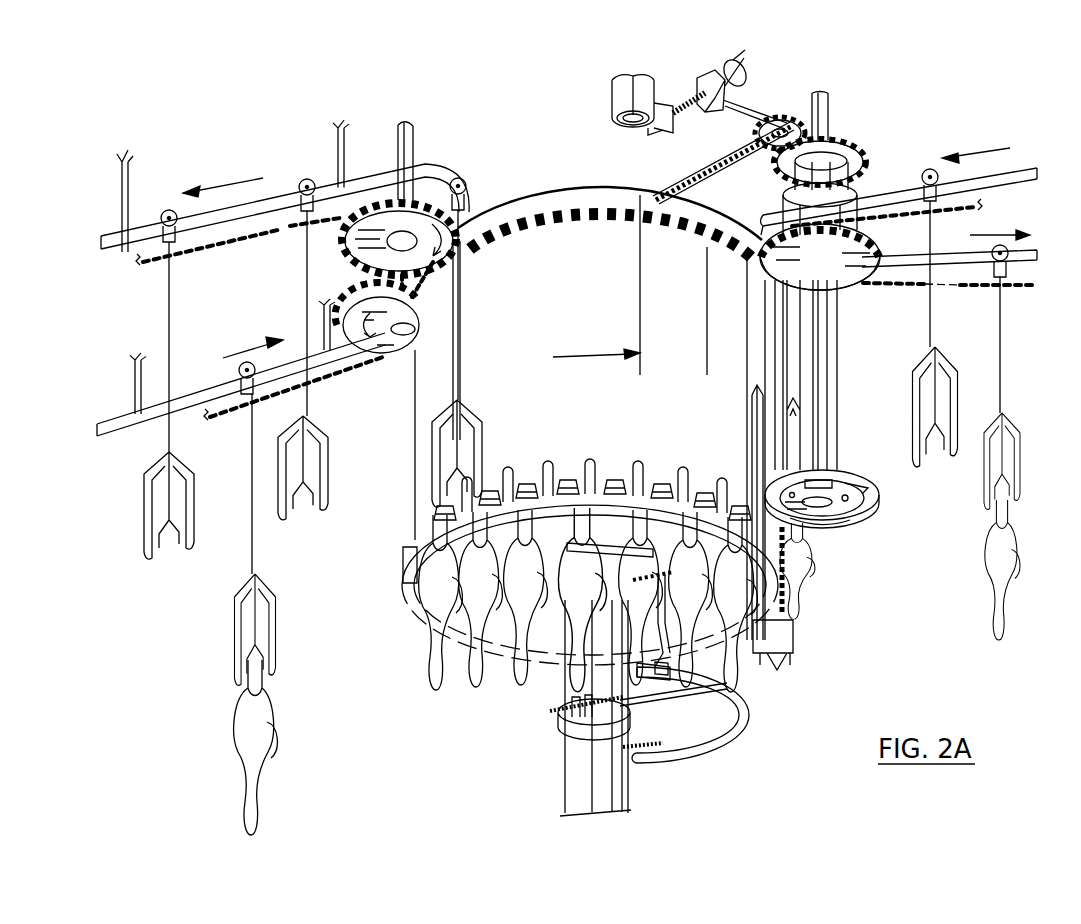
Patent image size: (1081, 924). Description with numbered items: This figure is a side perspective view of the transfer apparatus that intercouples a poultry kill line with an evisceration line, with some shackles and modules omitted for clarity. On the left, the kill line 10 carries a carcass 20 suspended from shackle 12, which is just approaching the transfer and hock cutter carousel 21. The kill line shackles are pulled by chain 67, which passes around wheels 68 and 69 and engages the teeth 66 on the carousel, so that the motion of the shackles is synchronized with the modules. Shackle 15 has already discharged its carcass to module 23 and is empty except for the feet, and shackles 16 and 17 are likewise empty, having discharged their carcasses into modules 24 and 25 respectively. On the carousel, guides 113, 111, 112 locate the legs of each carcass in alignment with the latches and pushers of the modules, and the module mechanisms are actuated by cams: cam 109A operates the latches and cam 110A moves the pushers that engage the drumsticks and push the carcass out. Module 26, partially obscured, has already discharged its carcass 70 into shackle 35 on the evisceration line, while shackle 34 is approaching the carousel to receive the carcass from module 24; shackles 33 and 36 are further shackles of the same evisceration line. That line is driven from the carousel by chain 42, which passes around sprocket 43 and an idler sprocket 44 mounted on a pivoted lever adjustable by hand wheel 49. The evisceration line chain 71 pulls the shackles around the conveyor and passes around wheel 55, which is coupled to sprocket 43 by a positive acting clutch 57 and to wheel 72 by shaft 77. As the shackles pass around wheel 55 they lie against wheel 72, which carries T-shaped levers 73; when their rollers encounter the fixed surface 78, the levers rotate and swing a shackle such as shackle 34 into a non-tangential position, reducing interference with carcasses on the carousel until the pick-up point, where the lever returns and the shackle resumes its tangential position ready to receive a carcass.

The kill line 10 is at (273, 200).
The shackle 12 is at (276, 632).
The shackle 15 is at (473, 403).
The shackle 16 is at (328, 462).
The shackle 17 is at (194, 490).
The carcass 20 is at (275, 724).
The transfer and hock cutter carousel 21 is at (611, 419).
The module 23 is at (487, 577).
The module 24 is at (620, 607).
The module 25 is at (740, 627).
The module 26 is at (770, 670).
The shackle 33 is at (917, 380).
The shackle 34 is at (752, 423).
The shackle 35 is at (797, 427).
The shackle 36 is at (1015, 420).
The chain 42 is at (680, 172).
The sprocket 43 is at (835, 145).
The idler sprocket 44 is at (762, 143).
The hand wheel 49 is at (753, 65).
The wheel 55 is at (850, 270).
The positive acting clutch 57 is at (783, 196).
The teeth 66 is at (507, 218).
The chain 67 is at (275, 228).
The wheel 68 is at (357, 249).
The wheel 69 is at (402, 343).
The carcass 70 is at (800, 547).
The chain 71 is at (893, 223).
The wheel 72 is at (840, 523).
The T-shaped lever 73 is at (850, 492).
The shaft 77 is at (823, 439).
The surface 78 is at (830, 522).
The cam 109A is at (727, 747).
The cam 110A is at (568, 553).
The guide 111 is at (527, 485).
The guide 112 is at (569, 480).
The guide 113 is at (490, 495).